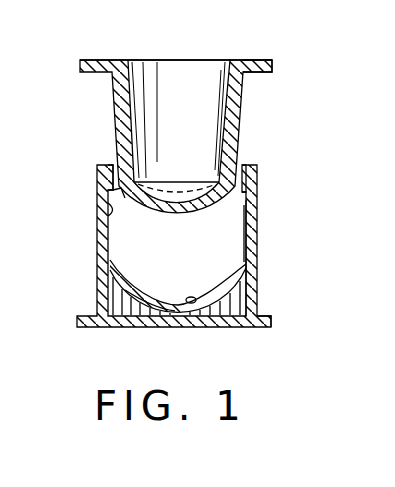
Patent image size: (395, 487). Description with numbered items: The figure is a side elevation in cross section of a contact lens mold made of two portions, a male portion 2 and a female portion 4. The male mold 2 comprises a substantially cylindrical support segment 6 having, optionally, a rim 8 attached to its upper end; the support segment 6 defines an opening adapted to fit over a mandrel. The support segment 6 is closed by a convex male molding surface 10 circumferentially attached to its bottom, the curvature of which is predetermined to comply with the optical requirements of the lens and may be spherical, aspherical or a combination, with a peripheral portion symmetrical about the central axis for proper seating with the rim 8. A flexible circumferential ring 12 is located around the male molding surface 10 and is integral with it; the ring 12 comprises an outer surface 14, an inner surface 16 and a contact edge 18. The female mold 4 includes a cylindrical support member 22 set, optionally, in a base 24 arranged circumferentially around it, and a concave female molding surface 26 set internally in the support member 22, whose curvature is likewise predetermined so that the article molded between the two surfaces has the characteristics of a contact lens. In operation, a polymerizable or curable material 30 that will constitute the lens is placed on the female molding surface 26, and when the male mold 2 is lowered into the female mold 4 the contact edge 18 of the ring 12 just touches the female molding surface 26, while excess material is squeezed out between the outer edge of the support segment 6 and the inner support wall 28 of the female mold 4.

The male portion 2 is at (246, 55).
The female portion 4 is at (263, 290).
The cylindrical support segment 6 is at (240, 128).
The rim 8 is at (273, 66).
The male molding surface 10 is at (164, 198).
The flexible circumferential ring 12 is at (257, 196).
The outer surface 14 is at (105, 189).
The inner surface 16 is at (121, 188).
The contact edge 18 is at (99, 218).
The cylindrical support member 22 is at (257, 243).
The base 24 is at (266, 326).
The female molding surface 26 is at (190, 303).
The inner support wall 28 is at (247, 242).
The polymerizable or curable material 30 is at (167, 298).